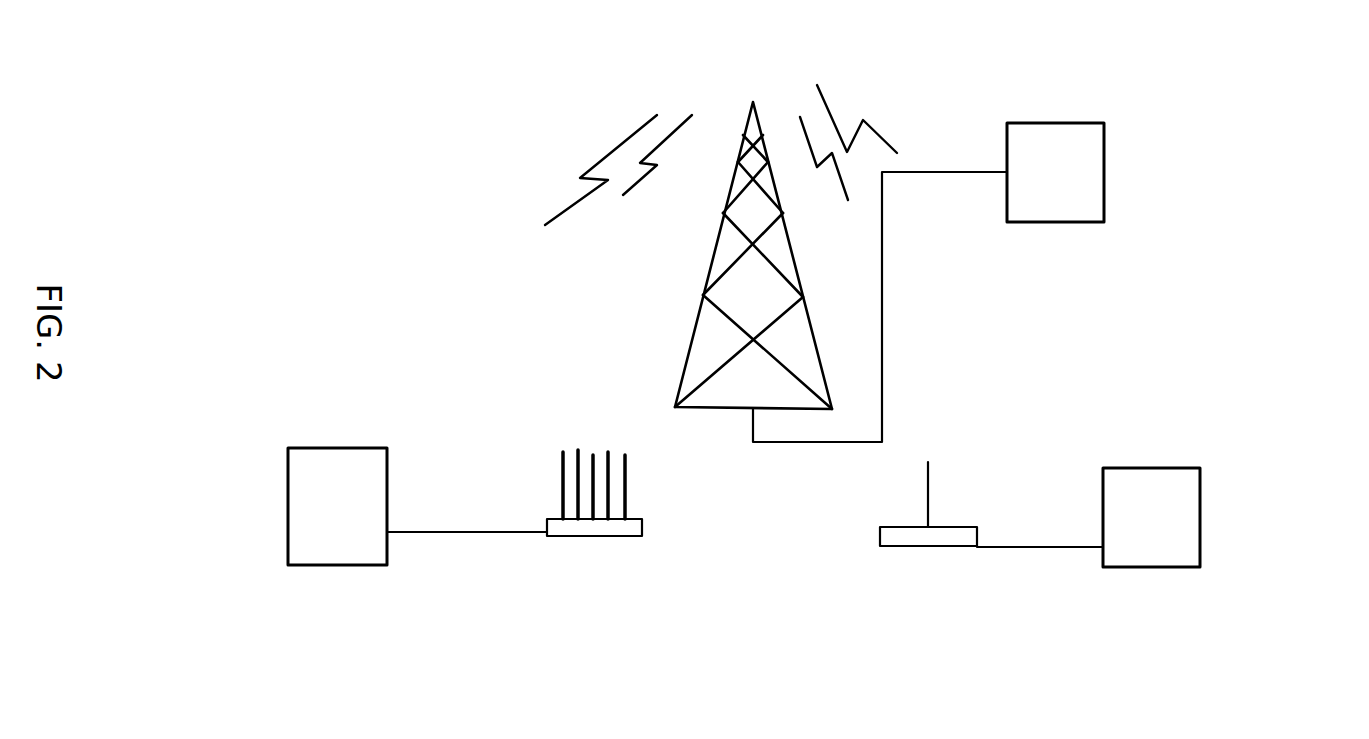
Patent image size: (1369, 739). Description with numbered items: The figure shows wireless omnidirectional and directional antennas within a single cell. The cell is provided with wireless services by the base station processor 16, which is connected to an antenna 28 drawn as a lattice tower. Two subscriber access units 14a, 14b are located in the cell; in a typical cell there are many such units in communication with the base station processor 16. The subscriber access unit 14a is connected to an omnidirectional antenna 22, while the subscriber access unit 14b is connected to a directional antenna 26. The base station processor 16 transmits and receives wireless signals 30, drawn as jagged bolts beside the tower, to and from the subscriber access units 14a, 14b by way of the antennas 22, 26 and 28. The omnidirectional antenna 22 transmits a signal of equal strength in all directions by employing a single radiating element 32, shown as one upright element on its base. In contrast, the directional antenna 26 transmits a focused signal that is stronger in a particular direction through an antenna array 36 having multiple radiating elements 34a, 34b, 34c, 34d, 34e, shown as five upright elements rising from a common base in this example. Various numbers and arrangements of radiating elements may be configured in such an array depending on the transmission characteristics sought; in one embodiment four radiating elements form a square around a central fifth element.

The subscriber access unit 14a is at (1202, 493).
The subscriber access unit 14b is at (288, 508).
The base station processor 16 is at (1105, 148).
The omnidirectional antenna 22 is at (992, 552).
The directional antenna 26 is at (545, 525).
The antenna 28 is at (703, 297).
The wireless signals 30 is at (617, 147).
The radiating element 32 is at (928, 483).
The radiating element 34a is at (562, 453).
The radiating element 34b is at (580, 450).
The radiating element 34c is at (597, 453).
The radiating element 34d is at (608, 454).
The radiating element 34e is at (627, 477).
The antenna array 36 is at (599, 446).